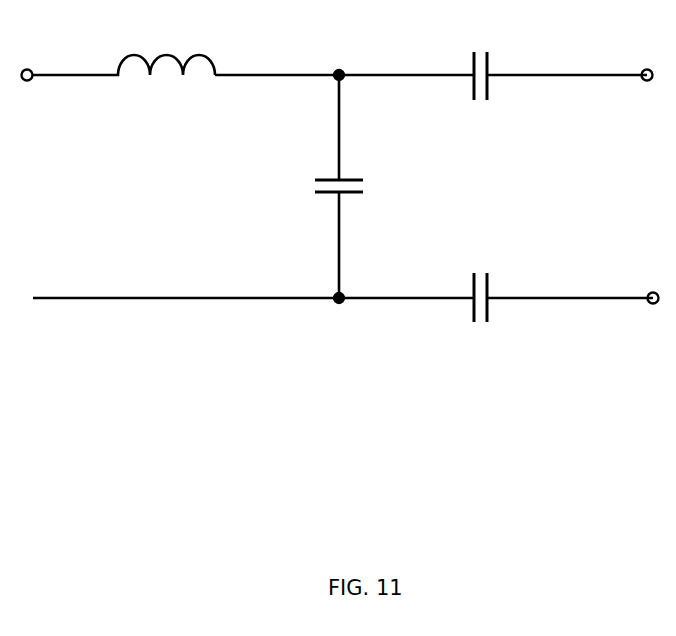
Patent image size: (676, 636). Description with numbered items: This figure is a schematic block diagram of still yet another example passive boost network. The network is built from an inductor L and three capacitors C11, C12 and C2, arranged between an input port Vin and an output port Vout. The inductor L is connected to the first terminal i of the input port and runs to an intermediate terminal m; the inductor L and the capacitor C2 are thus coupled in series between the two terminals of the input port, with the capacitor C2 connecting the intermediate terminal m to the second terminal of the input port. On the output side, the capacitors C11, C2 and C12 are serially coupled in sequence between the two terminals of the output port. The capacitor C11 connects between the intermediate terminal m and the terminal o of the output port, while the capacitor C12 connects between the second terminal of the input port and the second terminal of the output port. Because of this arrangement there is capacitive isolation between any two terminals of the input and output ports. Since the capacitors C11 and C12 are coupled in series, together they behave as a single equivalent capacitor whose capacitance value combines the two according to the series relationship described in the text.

The inductor L is at (124, 49).
The capacitor C11 is at (480, 61).
The capacitor C12 is at (483, 285).
The capacitor C2 is at (358, 188).
The terminal of the input port i is at (25, 54).
The intermediate terminal m is at (339, 170).
The terminal of the output port o is at (650, 170).
The input port Vin is at (48, 188).
The output port Vout is at (639, 188).